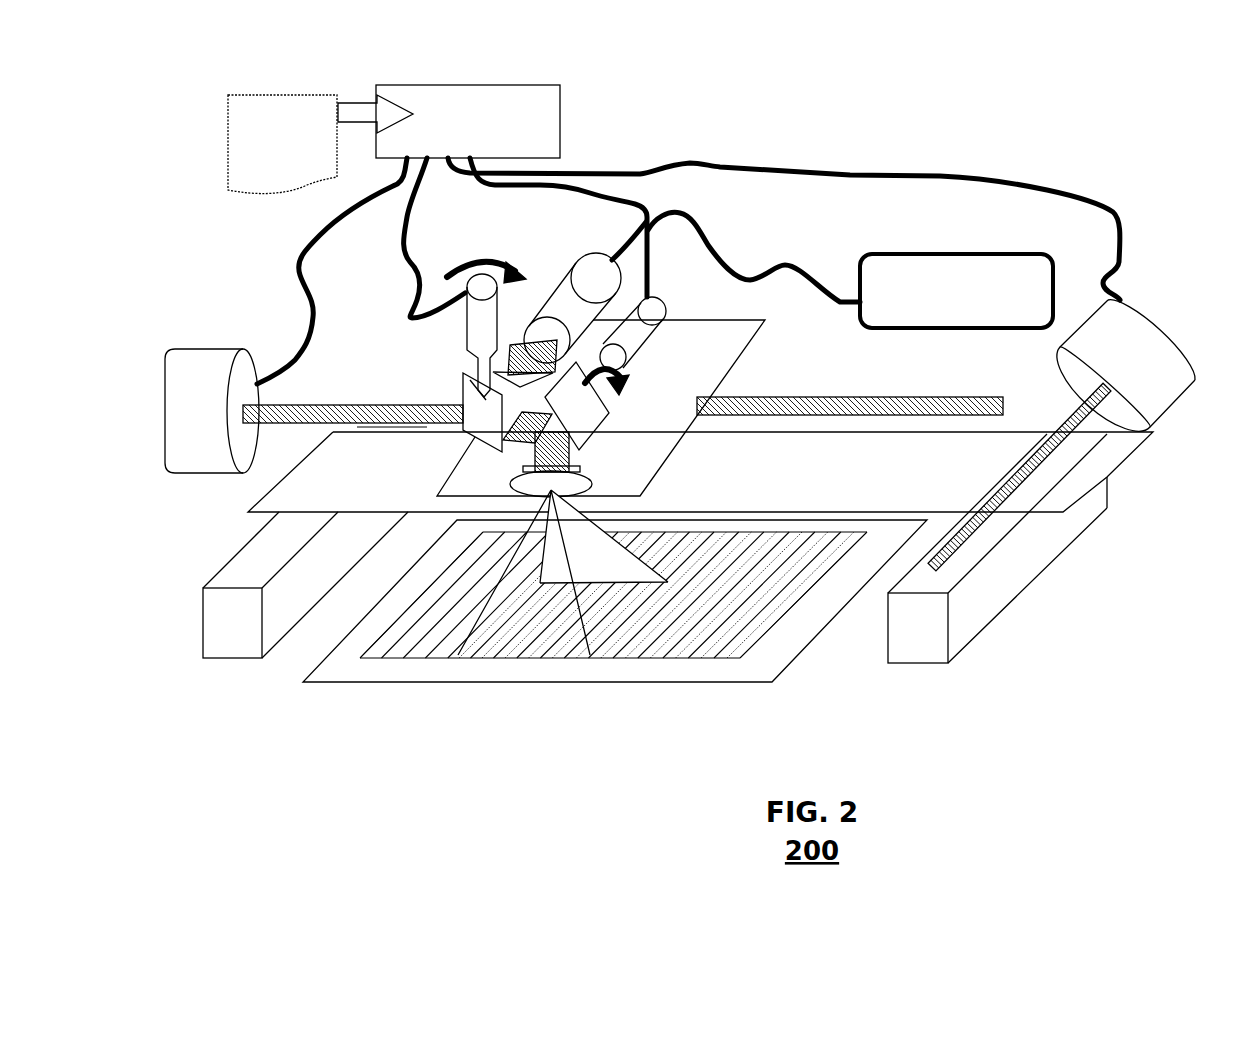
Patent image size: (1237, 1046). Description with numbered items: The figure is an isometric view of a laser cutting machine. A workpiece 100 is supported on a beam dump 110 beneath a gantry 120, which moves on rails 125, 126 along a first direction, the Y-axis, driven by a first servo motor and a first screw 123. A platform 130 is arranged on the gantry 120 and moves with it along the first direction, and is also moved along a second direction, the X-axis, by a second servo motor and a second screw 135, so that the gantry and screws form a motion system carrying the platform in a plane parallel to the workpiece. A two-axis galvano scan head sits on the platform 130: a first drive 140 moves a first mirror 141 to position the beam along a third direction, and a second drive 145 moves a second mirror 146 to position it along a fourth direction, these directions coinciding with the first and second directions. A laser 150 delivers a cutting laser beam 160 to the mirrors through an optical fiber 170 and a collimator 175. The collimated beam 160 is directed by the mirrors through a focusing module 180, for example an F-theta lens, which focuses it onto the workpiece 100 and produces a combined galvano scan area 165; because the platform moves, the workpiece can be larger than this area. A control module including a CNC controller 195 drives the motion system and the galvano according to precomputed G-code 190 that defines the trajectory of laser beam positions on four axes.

The workpiece 100 is at (435, 617).
The beam dump 110 is at (352, 642).
The gantry 120 is at (842, 486).
The first screw 123 is at (1157, 390).
The rail 125 is at (913, 630).
The rail 126 is at (215, 628).
The platform 130 is at (757, 330).
The second screw 135 is at (247, 367).
The first drive 140 is at (660, 300).
The first mirror 141 is at (587, 411).
The second drive 145 is at (466, 313).
The second mirror 146 is at (463, 375).
The laser 150 is at (937, 307).
The cutting laser beam 160 is at (548, 317).
The galvano scan area 165 is at (558, 617).
The optical fiber 170 is at (797, 253).
The collimator 175 is at (570, 283).
The focusing module 180 is at (583, 470).
The G-code 190 is at (230, 185).
The CNC controller 195 is at (545, 128).